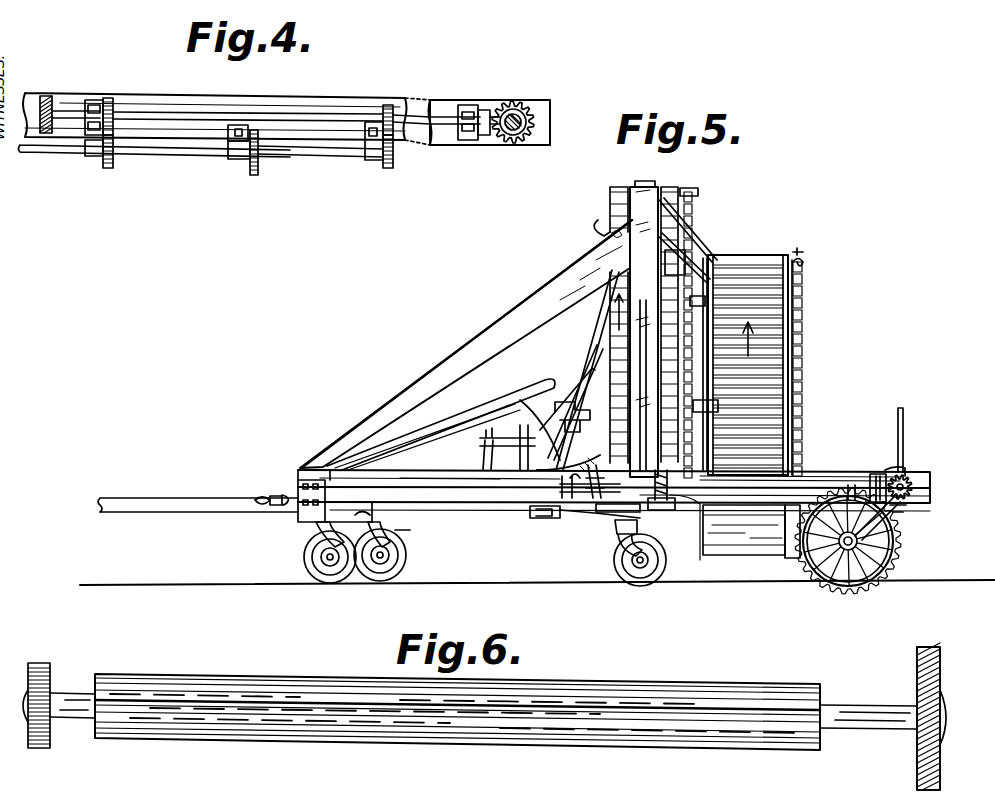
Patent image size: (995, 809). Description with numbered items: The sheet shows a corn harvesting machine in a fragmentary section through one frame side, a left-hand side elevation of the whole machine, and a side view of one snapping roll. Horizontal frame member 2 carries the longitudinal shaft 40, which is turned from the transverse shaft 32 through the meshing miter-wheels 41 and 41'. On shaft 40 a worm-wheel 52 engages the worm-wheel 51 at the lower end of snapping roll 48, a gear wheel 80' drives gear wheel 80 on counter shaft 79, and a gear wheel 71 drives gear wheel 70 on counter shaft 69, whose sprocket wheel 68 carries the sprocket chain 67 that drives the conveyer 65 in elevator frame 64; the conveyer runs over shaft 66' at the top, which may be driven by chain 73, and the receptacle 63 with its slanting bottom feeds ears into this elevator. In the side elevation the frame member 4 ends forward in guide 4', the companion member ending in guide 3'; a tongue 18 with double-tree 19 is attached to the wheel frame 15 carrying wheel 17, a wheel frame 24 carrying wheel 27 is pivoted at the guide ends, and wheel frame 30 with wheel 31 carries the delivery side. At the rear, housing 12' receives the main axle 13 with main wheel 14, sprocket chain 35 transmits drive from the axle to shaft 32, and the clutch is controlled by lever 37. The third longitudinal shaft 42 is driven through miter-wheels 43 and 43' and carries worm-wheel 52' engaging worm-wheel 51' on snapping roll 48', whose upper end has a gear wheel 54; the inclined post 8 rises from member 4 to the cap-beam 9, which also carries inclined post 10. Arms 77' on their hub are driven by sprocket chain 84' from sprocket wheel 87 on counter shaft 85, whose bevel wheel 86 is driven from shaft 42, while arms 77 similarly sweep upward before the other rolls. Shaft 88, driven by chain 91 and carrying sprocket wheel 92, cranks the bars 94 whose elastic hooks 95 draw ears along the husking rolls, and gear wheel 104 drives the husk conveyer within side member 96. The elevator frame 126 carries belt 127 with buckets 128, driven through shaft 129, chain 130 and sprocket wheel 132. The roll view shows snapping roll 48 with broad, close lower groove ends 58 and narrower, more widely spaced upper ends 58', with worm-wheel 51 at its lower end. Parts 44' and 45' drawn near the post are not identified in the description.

In FIG. 4, the horizontal frame member 2 is at (310, 100).
In FIG. 4, the longitudinal shaft 40 is at (268, 112).
In FIG. 4, the worm-wheel 52 is at (62, 100).
In FIG. 4, the gear wheel 80' is at (111, 99).
In FIG. 4, the gear wheel 80 is at (103, 168).
In FIG. 4, the counter shaft 79 is at (58, 153).
In FIG. 4, the sprocket wheel 68 is at (254, 175).
In FIG. 4, the counter shaft 69 is at (330, 158).
In FIG. 4, the gear wheel 71 is at (388, 105).
In FIG. 4, the gear wheel 70 is at (388, 168).
In FIG. 4, the miter-wheel 41 is at (474, 106).
In FIG. 4, the transverse shaft 32 is at (516, 101).
In FIG. 5, the transverse shaft 32 is at (913, 487).
In FIG. 4, the miter-wheel 41' is at (540, 117).
In FIG. 5, the tongue 18 is at (190, 498).
In FIG. 5, the double-tree 19 is at (275, 508).
In FIG. 5, the guide 3' is at (291, 489).
In FIG. 5, the guide 4' is at (306, 458).
In FIG. 5, the frame member 4 is at (614, 478).
In FIG. 5, the wheel frame 24 is at (318, 527).
In FIG. 5, the wheel 27 is at (304, 565).
In FIG. 5, the wheel frame 15 is at (375, 510).
In FIG. 5, the wheel 17 is at (410, 557).
In FIG. 5, the post 8 is at (598, 258).
In FIG. 5, the boom upper rail 44' is at (468, 343).
In FIG. 5, the tine bar 45' is at (441, 414).
In FIG. 5, the sprocket wheel 92 is at (500, 402).
In FIG. 5, the drive chain 91 is at (483, 455).
In FIG. 5, the inclined post 10 is at (590, 332).
In FIG. 5, the arms 77' is at (575, 399).
In FIG. 5, the arms 77 is at (567, 393).
In FIG. 5, the shaft 88 is at (545, 415).
In FIG. 5, the bars 94 is at (582, 410).
In FIG. 5, the elastic hooks 95 is at (492, 462).
In FIG. 5, the sprocket chain 84' is at (545, 504).
In FIG. 5, the bevel wheel 86 is at (588, 490).
In FIG. 5, the sprocket wheel 87 is at (575, 512).
In FIG. 5, the counter shaft 85 is at (600, 510).
In FIG. 5, the gear wheel 104 is at (538, 518).
In FIG. 5, the side member 96 is at (580, 520).
In FIG. 5, the wheel frame 30 is at (620, 540).
In FIG. 5, the wheel 31 is at (630, 578).
In FIG. 5, the worm-wheel 51' is at (664, 505).
In FIG. 5, the worm-wheel 52' is at (687, 534).
In FIG. 5, the receptacle 63 is at (735, 522).
In FIG. 5, the sprocket chain 67 is at (798, 560).
In FIG. 5, the cap-beam 9 is at (645, 185).
In FIG. 5, the conveyer belt 127 is at (620, 192).
In FIG. 5, the elevator frame 126 is at (606, 228).
In FIG. 5, the buckets 128 is at (690, 178).
In FIG. 5, the shaft 129 is at (696, 210).
In FIG. 5, the sprocket wheel 132 is at (696, 192).
In FIG. 5, the sprocket chain 130 is at (692, 245).
In FIG. 5, the gear wheel 54 is at (712, 258).
In FIG. 6, the gear wheel 54 is at (43, 663).
In FIG. 5, the conveyer 65 is at (760, 270).
In FIG. 5, the elevator frame 64 is at (790, 360).
In FIG. 5, the chain 73 is at (803, 326).
In FIG. 5, the shaft 66' is at (823, 263).
In FIG. 5, the snapping roll 48' is at (646, 385).
In FIG. 5, the operating lever 37 is at (906, 418).
In FIG. 5, the longitudinal shaft 42 is at (810, 485).
In FIG. 5, the main axle 13 is at (850, 485).
In FIG. 5, the miter-wheel 43 is at (873, 477).
In FIG. 5, the miter-wheel 43' is at (923, 465).
In FIG. 5, the sprocket chain 35 is at (908, 504).
In FIG. 5, the housing 12' is at (908, 521).
In FIG. 5, the main wheel 14 is at (898, 568).
In FIG. 6, the snapping roll 48 is at (457, 697).
In FIG. 6, the upper groove ends 58' is at (100, 681).
In FIG. 6, the lower groove ends 58 is at (832, 691).
In FIG. 6, the worm-wheel 51 is at (909, 716).